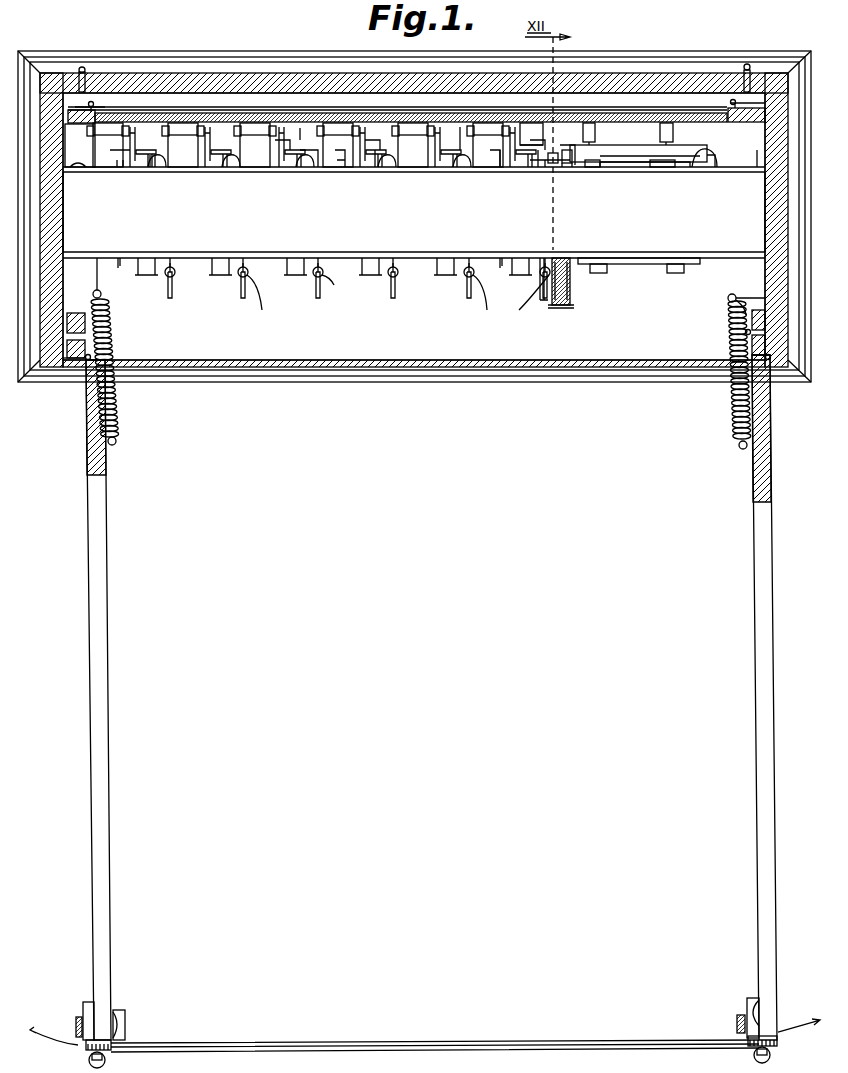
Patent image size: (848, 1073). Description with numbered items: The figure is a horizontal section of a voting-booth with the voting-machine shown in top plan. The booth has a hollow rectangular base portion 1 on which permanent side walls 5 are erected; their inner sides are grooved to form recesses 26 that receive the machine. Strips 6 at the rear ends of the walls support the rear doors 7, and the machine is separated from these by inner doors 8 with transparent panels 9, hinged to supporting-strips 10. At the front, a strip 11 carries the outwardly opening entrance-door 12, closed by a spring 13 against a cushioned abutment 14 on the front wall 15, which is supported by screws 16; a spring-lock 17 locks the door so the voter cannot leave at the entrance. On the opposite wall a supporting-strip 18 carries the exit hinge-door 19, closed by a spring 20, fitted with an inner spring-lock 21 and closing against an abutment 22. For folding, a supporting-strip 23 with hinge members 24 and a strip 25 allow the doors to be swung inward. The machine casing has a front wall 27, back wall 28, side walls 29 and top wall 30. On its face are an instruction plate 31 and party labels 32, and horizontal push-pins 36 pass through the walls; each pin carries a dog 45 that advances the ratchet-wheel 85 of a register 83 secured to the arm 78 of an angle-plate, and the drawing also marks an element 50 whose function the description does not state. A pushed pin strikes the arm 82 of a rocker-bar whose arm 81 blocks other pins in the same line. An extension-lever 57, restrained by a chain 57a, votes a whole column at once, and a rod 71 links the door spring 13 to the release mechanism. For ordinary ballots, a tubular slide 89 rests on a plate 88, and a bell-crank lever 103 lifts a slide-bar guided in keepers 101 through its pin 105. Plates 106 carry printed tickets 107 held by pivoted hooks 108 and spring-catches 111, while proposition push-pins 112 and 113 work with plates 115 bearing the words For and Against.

The rectangular base portion 1 is at (437, 382).
The side walls 5 is at (48, 74).
The strips 6 is at (83, 69).
The doors 7 is at (230, 74).
The doors 8 is at (395, 113).
The transparent panels 9 is at (298, 107).
The supporting-strips 10 is at (92, 103).
The strip 11 is at (87, 360).
The entrance-door 12 is at (90, 666).
The spring 13 is at (118, 420).
The abutment 14 is at (126, 1018).
The front wall 15 is at (784, 1058).
The screws 16 is at (86, 1057).
The spring-lock 17 is at (83, 1004).
The supporting-strip 18 is at (735, 355).
The hinge-door 19 is at (779, 697).
The spring 20 is at (765, 165).
The spring-lock 21 is at (410, 1023).
The abutment 22 is at (745, 1005).
The supporting-strip 23 is at (728, 299).
The hinge members 24 is at (752, 330).
The strip 25 is at (86, 322).
The recesses 26 is at (78, 167).
The front wall 27 is at (192, 252).
The back wall 28 is at (598, 168).
The side walls 29 is at (63, 209).
The top wall 30 is at (414, 192).
The plate 31 is at (194, 262).
The labels 32 is at (118, 270).
The push-pins 36 is at (375, 150).
The dog 45 is at (232, 158).
The blocks 50 is at (128, 150).
The extension-lever 57 is at (373, 302).
The chain 57a is at (404, 302).
The rod 71 is at (93, 292).
The laterally-projecting arm 78 is at (218, 155).
The arm 81 is at (118, 165).
The arm 82 is at (160, 170).
The register 83 is at (665, 168).
The ratchet-wheel 85 is at (305, 160).
The plate 88 is at (272, 158).
The tubular slide 89 is at (553, 300).
The keepers 101 is at (541, 168).
The bell-crank lever 103 is at (560, 150).
The pin 105 is at (567, 168).
The plate 106 is at (503, 165).
The printed slip or ticket 107 is at (467, 120).
The pivoted hooks 108 is at (340, 165).
The spring-catches 111 is at (172, 150).
The push-pins 112 is at (600, 273).
The push-pins 113 is at (685, 270).
The plates 115 is at (640, 165).